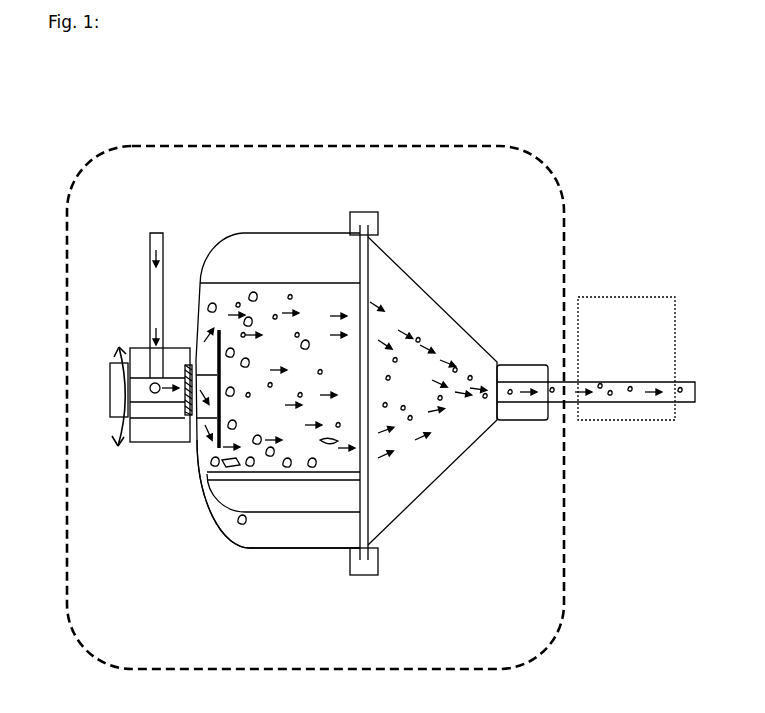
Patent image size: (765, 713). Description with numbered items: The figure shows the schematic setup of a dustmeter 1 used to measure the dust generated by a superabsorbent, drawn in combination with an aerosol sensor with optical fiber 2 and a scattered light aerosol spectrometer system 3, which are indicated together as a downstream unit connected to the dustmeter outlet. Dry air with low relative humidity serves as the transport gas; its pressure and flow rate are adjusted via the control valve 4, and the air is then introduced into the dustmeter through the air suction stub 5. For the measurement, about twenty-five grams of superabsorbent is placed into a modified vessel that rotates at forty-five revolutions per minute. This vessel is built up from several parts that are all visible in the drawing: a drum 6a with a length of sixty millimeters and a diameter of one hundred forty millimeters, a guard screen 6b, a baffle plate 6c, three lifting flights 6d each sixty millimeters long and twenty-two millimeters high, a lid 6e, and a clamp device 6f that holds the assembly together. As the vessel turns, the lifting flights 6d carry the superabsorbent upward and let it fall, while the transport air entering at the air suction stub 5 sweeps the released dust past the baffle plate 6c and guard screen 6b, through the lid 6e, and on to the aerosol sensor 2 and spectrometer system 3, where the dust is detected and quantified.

The dustmeter 1 is at (300, 143).
The aerosol sensor with optical fiber 2 is at (628, 312).
The scattered light aerosol spectrometer system 3 is at (597, 330).
The control valve 4 is at (165, 237).
The air suction stub 5 is at (266, 253).
The drum 6a is at (190, 418).
The guard screen 6b is at (210, 450).
The baffle plate 6c is at (245, 498).
The lifting flights 6d is at (327, 527).
The lid 6e is at (413, 285).
The clamp device 6f is at (360, 570).